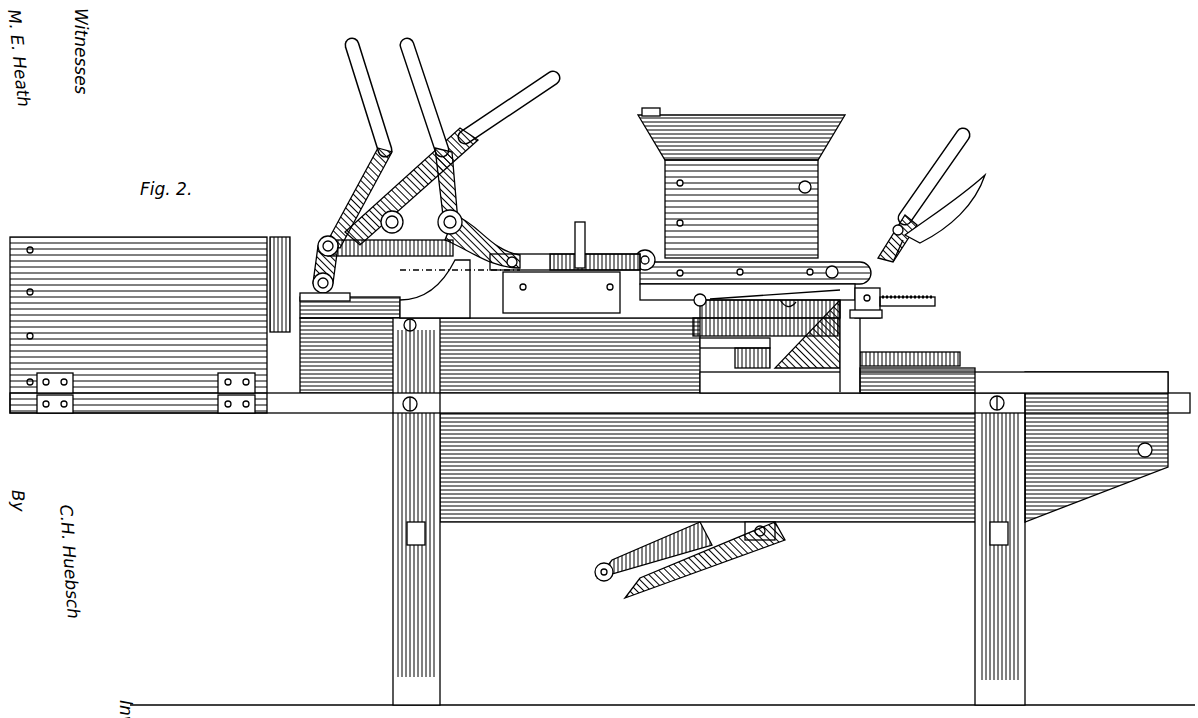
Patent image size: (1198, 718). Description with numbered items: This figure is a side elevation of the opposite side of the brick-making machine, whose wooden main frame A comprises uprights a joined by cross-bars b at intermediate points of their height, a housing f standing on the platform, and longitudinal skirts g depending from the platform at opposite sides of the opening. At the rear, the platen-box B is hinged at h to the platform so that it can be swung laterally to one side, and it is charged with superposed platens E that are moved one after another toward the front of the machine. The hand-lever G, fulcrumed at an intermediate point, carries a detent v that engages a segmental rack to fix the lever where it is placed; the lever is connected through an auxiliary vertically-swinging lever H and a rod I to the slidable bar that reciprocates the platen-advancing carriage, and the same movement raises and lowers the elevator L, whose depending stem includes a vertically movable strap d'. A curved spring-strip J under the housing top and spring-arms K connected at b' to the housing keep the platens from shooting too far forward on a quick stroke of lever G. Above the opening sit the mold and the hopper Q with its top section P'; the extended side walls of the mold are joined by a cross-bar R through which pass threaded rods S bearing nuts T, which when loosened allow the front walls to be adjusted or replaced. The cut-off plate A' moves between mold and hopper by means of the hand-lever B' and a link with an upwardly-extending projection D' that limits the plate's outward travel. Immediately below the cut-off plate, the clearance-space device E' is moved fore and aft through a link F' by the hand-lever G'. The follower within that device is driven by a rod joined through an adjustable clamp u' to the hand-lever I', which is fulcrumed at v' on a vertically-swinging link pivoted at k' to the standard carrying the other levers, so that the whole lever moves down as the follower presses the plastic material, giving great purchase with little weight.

The platen-box B is at (150, 312).
The hinge h is at (74, 393).
The uprights a is at (395, 592).
The cross-bars b is at (685, 540).
The longitudinal skirts g is at (732, 467).
The housing f is at (500, 345).
The main frame A is at (1096, 454).
The platens E is at (798, 342).
The clearance-space device E' is at (755, 290).
The elevator L is at (733, 350).
The strap d' is at (761, 445).
The spring-arm connection b' is at (686, 293).
The spring-arms K is at (750, 292).
The cross-bar R is at (882, 293).
The threaded rods S is at (934, 298).
The nuts T is at (882, 312).
The top section of hopper P' is at (741, 126).
The hopper Q is at (812, 220).
The hand-lever G is at (931, 198).
The detent v is at (922, 251).
The cut-off plate A' is at (633, 246).
The upwardly-extending projection D' is at (594, 235).
The link F' is at (482, 241).
The hand-lever I' is at (449, 160).
The hand-lever G' is at (358, 146).
The hand-lever B' is at (432, 134).
The fulcrum v' is at (373, 245).
The adjustable clamp u' is at (330, 287).
The curved spring-strip J is at (382, 228).
The pivot to standard k' is at (437, 215).
The auxiliary vertically-swinging lever H is at (670, 575).
The rod I is at (705, 560).